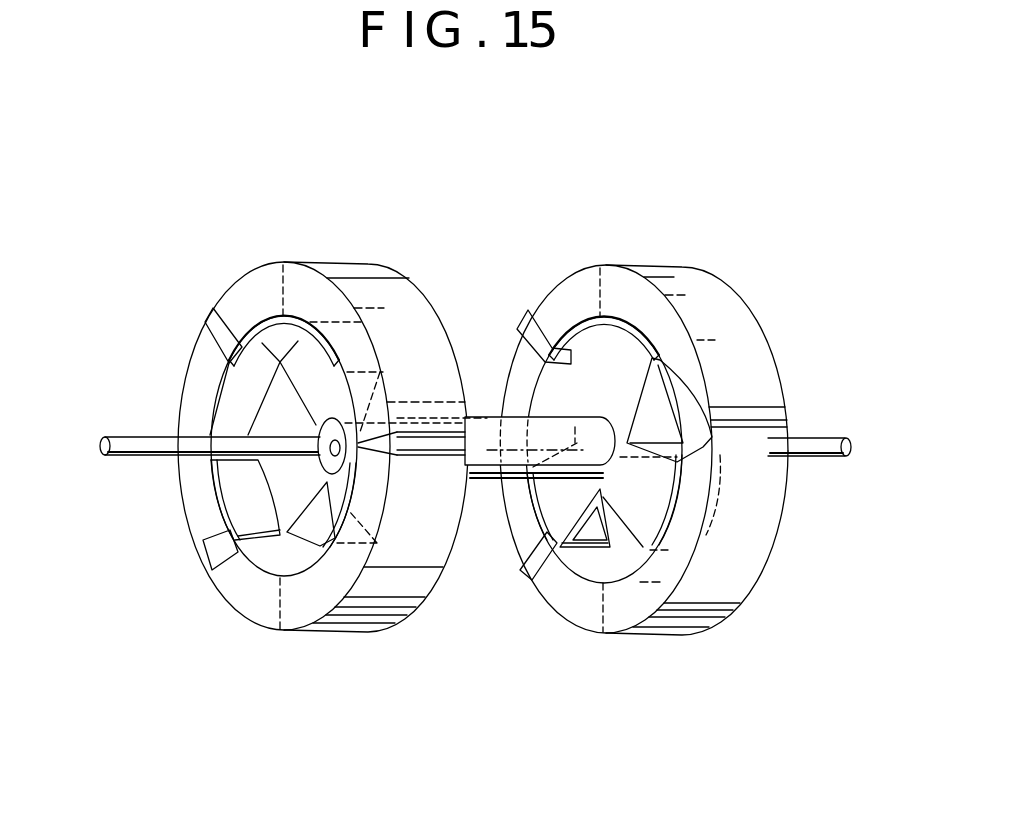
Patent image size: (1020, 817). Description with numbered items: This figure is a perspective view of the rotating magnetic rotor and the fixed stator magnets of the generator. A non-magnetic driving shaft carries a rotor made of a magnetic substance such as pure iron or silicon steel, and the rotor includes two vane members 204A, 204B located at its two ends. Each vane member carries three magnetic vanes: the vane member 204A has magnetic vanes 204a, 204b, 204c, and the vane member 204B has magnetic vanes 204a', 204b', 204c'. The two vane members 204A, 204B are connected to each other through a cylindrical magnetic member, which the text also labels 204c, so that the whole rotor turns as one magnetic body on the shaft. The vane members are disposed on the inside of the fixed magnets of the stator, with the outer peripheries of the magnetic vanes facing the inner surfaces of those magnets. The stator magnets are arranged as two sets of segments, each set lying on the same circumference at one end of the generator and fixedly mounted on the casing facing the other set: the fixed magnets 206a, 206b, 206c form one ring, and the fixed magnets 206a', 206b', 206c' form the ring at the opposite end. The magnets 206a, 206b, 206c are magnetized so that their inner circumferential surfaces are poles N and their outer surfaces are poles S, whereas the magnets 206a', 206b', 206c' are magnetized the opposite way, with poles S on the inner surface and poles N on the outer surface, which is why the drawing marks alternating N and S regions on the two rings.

The vane member 204A is at (632, 320).
The vane member 204B is at (298, 262).
The magnetic vane 204a is at (738, 403).
The magnetic vane 204b is at (705, 529).
The magnetic vane 204c is at (480, 463).
The magnetic vane 204a' is at (225, 350).
The magnetic vane 204b' is at (362, 576).
The magnetic vane 204c' is at (197, 525).
The fixed magnet 206a is at (726, 358).
The fixed magnet 206b is at (739, 543).
The fixed magnet 206c is at (606, 436).
The fixed magnet 206a' is at (376, 309).
The fixed magnet 206b' is at (361, 568).
The fixed magnet 206c' is at (227, 446).